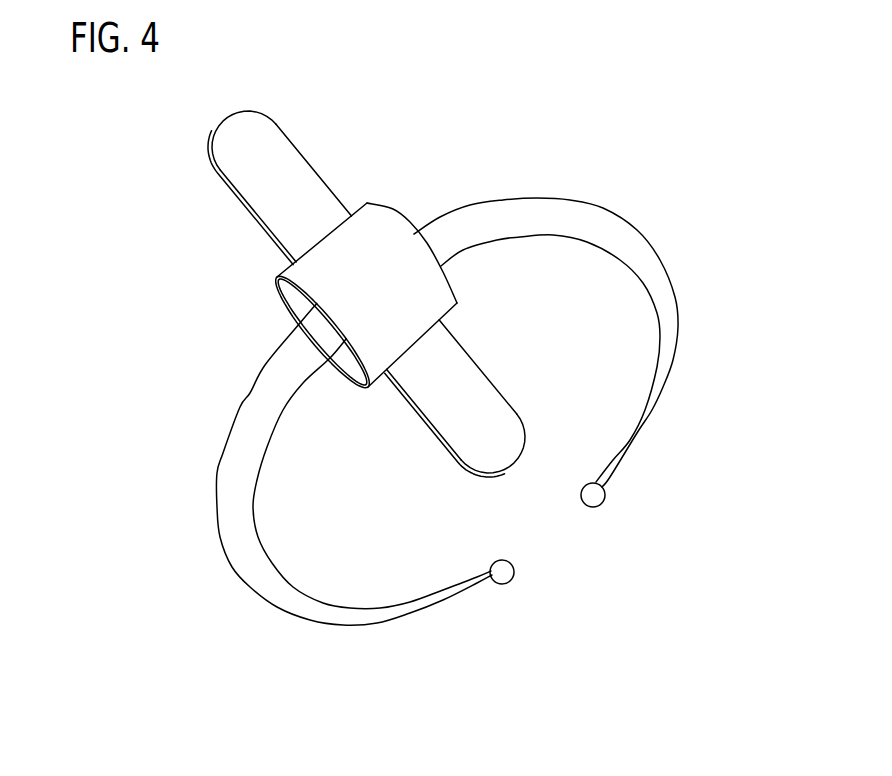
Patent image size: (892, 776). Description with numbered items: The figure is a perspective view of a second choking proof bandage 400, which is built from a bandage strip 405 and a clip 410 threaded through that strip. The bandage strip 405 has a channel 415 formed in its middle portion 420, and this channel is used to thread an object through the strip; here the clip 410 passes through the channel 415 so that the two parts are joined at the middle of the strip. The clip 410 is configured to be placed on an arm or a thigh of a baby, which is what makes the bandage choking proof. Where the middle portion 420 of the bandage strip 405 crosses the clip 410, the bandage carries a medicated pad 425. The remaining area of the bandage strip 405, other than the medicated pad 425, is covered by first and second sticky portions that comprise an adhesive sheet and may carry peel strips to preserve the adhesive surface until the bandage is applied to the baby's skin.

The second choking proof bandage 400 is at (641, 195).
The bandage strip 405 is at (283, 186).
The clip 410 is at (659, 250).
The channel 415 is at (277, 310).
The middle portion 420 is at (402, 289).
The medicated pad 425 is at (340, 384).